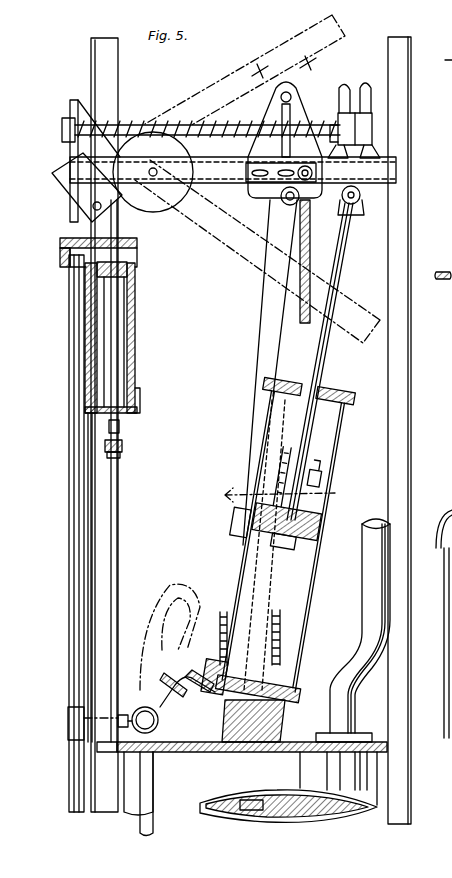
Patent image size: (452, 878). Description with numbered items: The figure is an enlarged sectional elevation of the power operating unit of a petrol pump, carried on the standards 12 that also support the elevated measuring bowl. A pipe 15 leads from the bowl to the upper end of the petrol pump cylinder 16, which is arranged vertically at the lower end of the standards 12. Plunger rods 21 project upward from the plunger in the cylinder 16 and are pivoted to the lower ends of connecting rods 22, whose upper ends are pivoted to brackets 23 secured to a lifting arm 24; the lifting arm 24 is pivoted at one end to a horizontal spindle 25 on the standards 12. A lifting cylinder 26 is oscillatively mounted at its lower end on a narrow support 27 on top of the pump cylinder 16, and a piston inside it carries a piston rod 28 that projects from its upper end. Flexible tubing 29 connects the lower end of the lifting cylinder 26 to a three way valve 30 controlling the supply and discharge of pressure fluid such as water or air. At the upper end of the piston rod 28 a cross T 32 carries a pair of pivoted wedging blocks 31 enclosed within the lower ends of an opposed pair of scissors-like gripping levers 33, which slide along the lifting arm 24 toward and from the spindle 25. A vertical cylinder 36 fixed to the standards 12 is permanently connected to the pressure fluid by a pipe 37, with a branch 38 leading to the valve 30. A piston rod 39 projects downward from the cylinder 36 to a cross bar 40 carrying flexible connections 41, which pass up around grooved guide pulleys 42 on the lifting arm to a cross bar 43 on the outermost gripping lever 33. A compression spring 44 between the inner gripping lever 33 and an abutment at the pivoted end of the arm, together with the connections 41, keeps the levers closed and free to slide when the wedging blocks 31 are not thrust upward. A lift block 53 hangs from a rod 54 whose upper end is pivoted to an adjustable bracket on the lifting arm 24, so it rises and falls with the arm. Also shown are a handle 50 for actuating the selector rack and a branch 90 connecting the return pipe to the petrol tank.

The standards 12 is at (98, 62).
The pipe 15 is at (366, 618).
The petrol pump cylinder 16 is at (242, 789).
The plunger rods 21 is at (248, 585).
The connecting rods 22 is at (270, 372).
The brackets 23 is at (262, 195).
The lifting arm 24 is at (233, 179).
The horizontal spindle 25 is at (92, 208).
The lifting cylinder 26 is at (302, 585).
The narrow support 27 is at (222, 716).
The piston rod 28 is at (322, 364).
The flexible tubing 29 is at (162, 600).
The three way valve 30 is at (140, 712).
The wedging blocks 31 is at (365, 210).
The cross T 32 is at (361, 195).
The gripping levers 33 is at (350, 112).
The vertical cylinder 36 is at (137, 332).
The pipe 37 is at (78, 397).
The branch 38 is at (61, 533).
The piston rod 39 is at (120, 421).
The cross bar 40 is at (124, 450).
The flexible connections 41 is at (118, 233).
The grooved guide pulleys 42 is at (153, 172).
The cross bar 43 is at (372, 120).
The compression spring 44 is at (128, 135).
The handle 50 is at (442, 279).
The lift block 53 is at (226, 497).
The rod 54 is at (311, 262).
The branch 90 is at (440, 768).